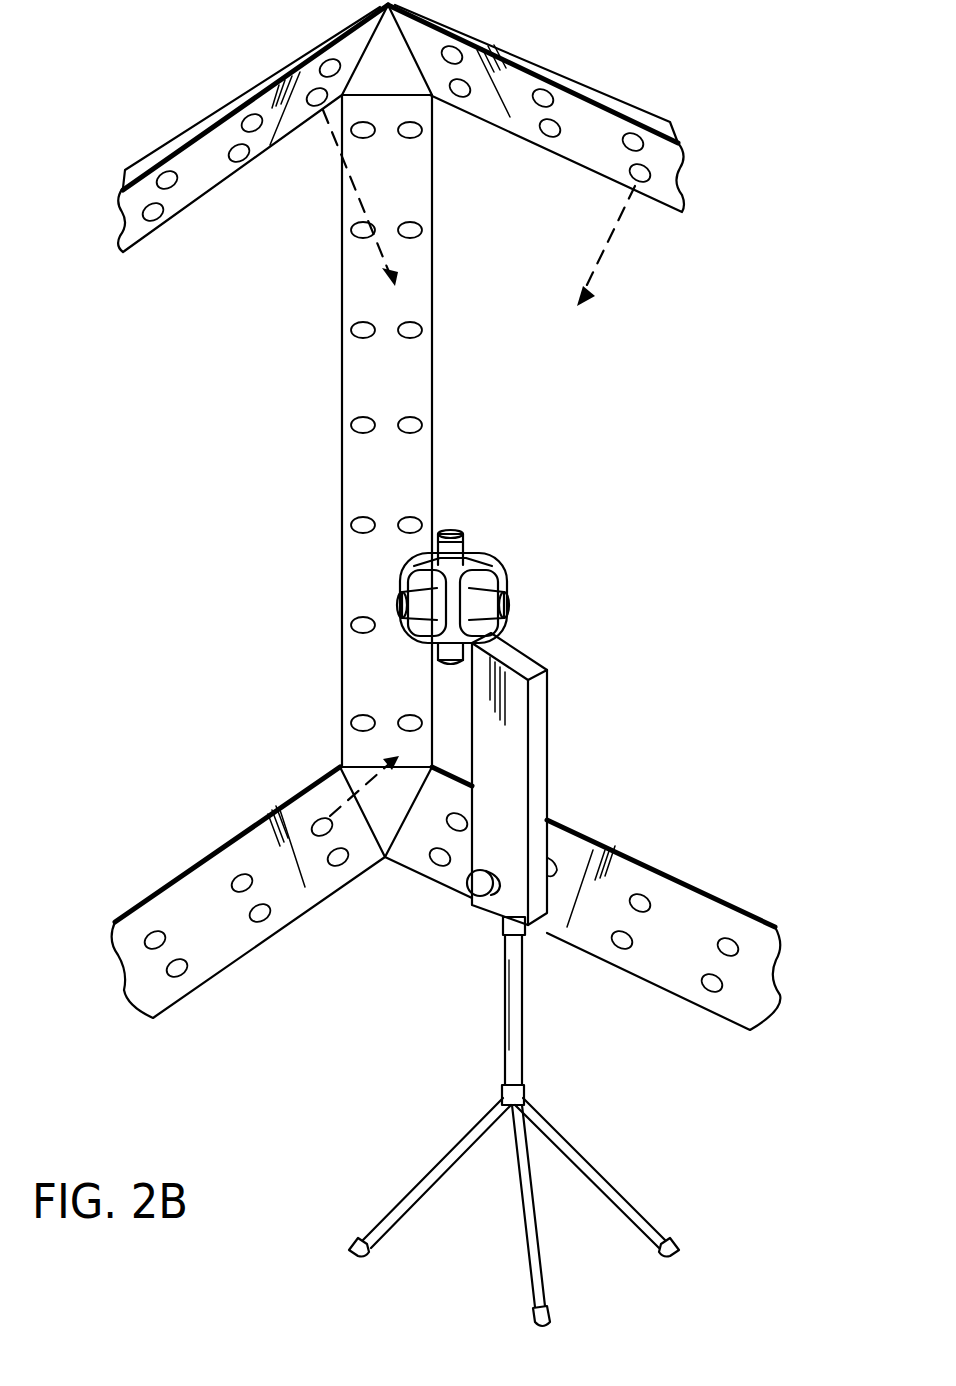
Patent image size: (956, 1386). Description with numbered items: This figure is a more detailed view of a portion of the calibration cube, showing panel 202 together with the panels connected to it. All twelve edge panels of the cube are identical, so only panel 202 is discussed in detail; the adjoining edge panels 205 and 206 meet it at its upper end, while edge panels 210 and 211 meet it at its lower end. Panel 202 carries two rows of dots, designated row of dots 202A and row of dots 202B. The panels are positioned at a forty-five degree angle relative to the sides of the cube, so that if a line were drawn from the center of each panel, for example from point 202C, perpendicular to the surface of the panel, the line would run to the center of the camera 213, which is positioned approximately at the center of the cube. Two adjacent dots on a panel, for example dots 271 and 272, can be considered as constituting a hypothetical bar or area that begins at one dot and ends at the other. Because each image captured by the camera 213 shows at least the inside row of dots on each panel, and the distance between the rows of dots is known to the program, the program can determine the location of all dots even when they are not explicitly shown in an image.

The panel 202 is at (425, 378).
The row of dots 202A is at (355, 232).
The row of dots 202B is at (420, 232).
The point 202C is at (388, 402).
The edge panel 205 is at (230, 103).
The edge panel 206 is at (565, 78).
The edge panel 210 is at (287, 897).
The edge panel 211 is at (455, 882).
The camera 213 is at (490, 560).
The dot 271 is at (637, 898).
The dot 272 is at (620, 950).